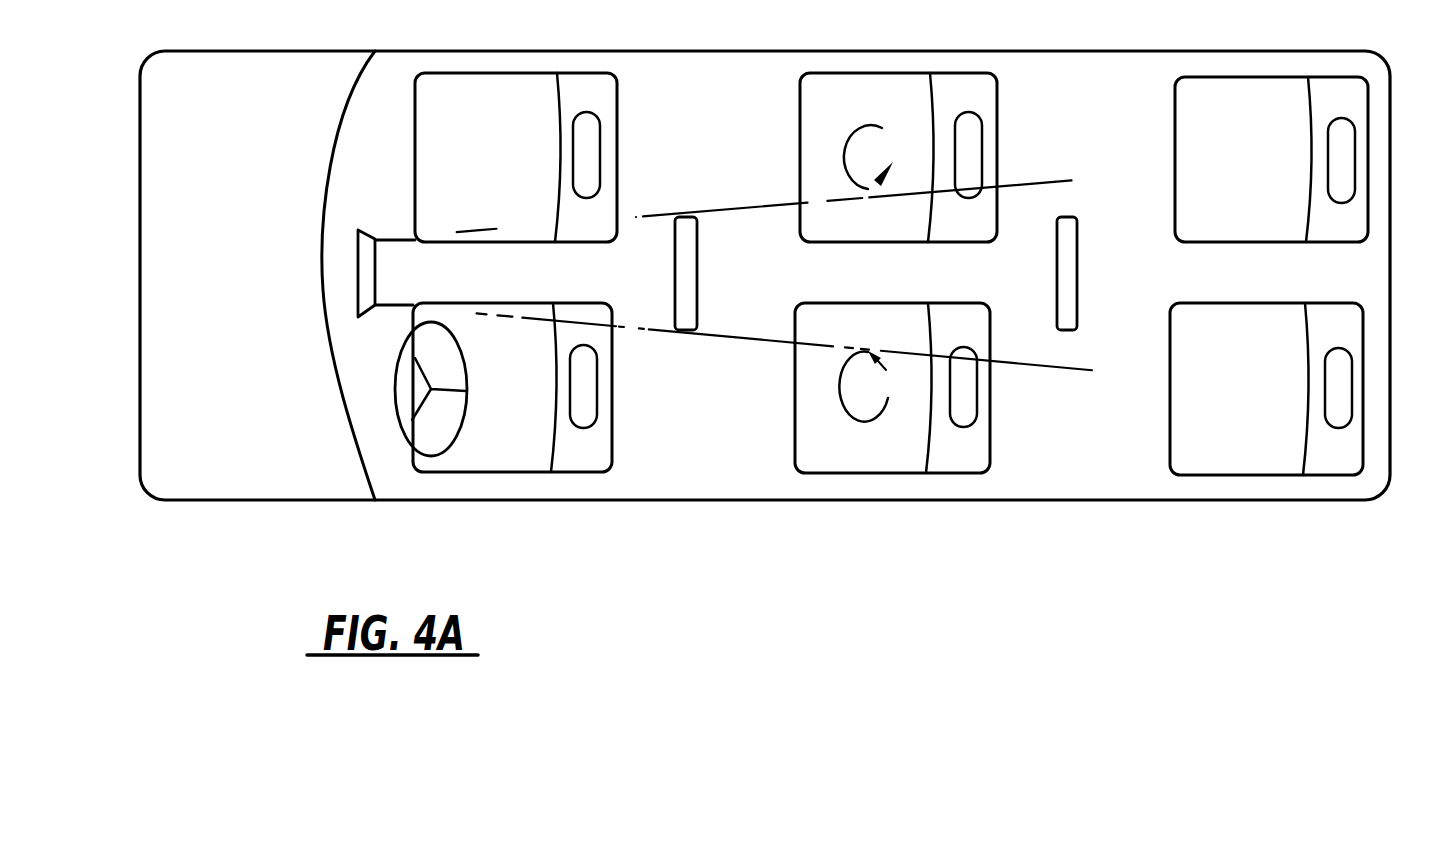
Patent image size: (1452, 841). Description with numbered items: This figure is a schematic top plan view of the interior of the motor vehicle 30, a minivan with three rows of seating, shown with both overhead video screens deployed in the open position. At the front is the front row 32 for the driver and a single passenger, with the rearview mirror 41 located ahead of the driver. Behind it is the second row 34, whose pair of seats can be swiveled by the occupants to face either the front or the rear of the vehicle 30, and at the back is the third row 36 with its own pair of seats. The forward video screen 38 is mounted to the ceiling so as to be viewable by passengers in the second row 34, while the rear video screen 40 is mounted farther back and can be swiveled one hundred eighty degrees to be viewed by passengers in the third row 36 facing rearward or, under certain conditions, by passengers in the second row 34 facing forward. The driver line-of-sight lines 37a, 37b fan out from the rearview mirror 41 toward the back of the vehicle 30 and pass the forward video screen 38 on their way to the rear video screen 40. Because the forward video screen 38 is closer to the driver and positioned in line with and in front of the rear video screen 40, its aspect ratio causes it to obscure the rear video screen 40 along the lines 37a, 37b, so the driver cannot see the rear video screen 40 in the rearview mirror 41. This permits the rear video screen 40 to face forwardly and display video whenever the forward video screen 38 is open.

The motor vehicle 30 is at (250, 523).
The front row 32 is at (560, 492).
The second row 34 is at (864, 492).
The third row 36 is at (1266, 494).
The driver line-of-sight line 37a is at (747, 338).
The driver line-of-sight line 37b is at (748, 187).
The forward video screen 38 is at (697, 268).
The rear video screen 40 is at (1077, 245).
The rearview mirror 41 is at (358, 281).